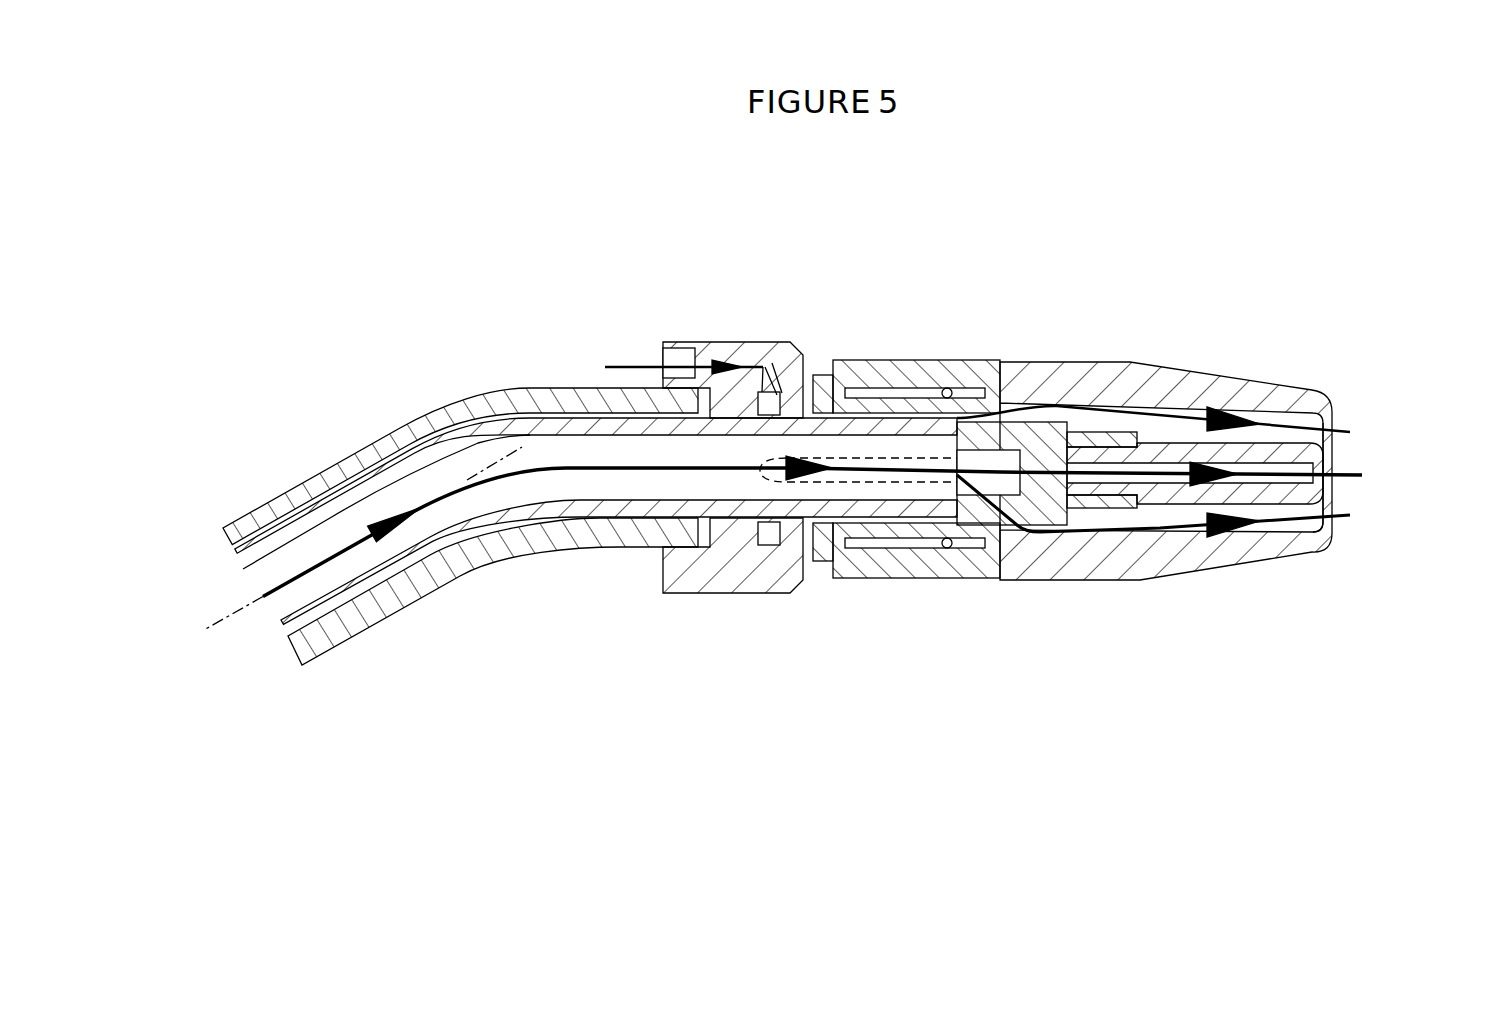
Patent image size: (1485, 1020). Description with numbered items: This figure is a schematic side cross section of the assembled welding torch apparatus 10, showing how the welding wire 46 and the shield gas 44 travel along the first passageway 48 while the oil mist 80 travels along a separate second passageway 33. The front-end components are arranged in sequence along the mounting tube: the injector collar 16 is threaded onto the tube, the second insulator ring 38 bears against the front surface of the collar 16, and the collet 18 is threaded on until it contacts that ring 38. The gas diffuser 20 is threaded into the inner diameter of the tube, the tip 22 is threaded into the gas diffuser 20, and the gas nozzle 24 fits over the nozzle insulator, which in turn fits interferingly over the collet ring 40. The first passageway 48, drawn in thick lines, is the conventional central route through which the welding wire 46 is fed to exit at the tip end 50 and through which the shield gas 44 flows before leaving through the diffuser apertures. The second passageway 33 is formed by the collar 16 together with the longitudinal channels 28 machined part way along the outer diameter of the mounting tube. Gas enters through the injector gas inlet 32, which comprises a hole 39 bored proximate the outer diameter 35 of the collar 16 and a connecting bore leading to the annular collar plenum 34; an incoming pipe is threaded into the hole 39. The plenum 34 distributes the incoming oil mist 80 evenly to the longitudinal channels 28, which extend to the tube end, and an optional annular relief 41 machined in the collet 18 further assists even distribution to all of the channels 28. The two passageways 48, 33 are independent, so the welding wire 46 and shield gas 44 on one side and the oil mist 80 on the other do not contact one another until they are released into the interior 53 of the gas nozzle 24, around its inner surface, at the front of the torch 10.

The welding torch apparatus 10 is at (1035, 212).
The injector collar 16 is at (675, 577).
The collet 18 is at (927, 580).
The gas diffuser 20 is at (1033, 503).
The tip 22 is at (1300, 495).
The gas nozzle 24 is at (1127, 375).
The longitudinal channels 28 is at (842, 458).
The injector gas inlet 32 is at (658, 342).
The second passageway 33 is at (797, 348).
The annular collar plenum 34 is at (767, 548).
The outer diameter 35 is at (731, 342).
The second insulator ring 38 is at (798, 548).
The hole 39 is at (663, 345).
The collet ring 40 is at (875, 580).
The annular relief 41 is at (820, 543).
The shield gas 44 is at (343, 551).
The welding wire 46 is at (452, 482).
The first passageway 48 is at (600, 470).
The tip end 50 is at (1317, 457).
The interior 53 is at (1050, 423).
The oil mist 80 is at (605, 365).